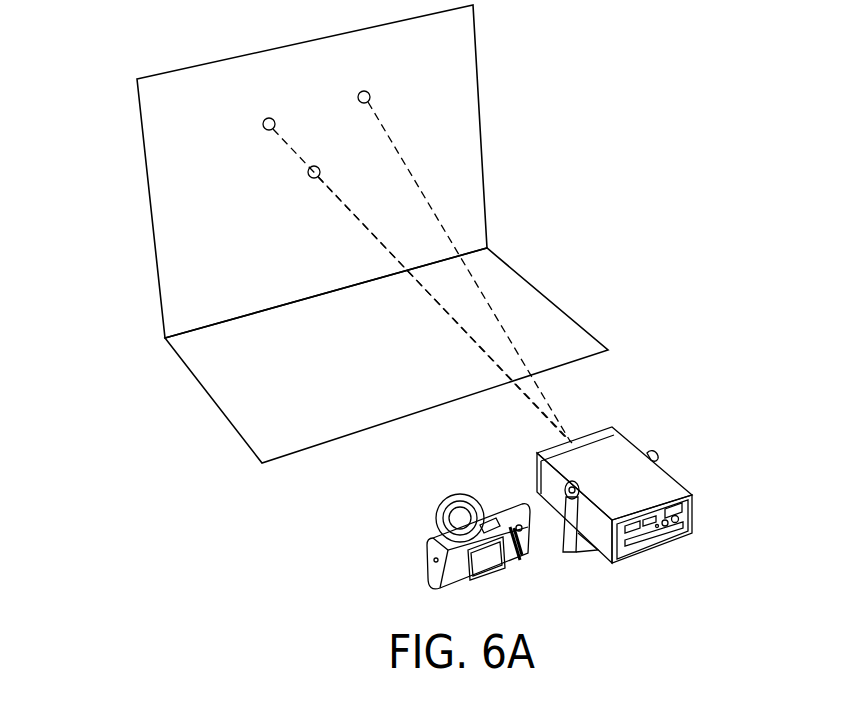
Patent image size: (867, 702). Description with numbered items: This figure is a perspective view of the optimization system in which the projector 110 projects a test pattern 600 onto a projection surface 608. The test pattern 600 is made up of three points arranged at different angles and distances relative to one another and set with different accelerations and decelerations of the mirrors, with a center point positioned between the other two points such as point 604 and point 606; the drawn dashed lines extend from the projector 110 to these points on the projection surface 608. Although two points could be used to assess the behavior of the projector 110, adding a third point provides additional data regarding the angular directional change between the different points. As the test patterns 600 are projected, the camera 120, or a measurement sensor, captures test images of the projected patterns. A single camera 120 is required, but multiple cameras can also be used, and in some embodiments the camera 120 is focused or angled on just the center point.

The test pattern 600 is at (437, 137).
The point 604 is at (371, 98).
The point 606 is at (269, 117).
The projection surface 608 is at (308, 172).
The projector 110 is at (690, 488).
The camera 120 is at (440, 512).